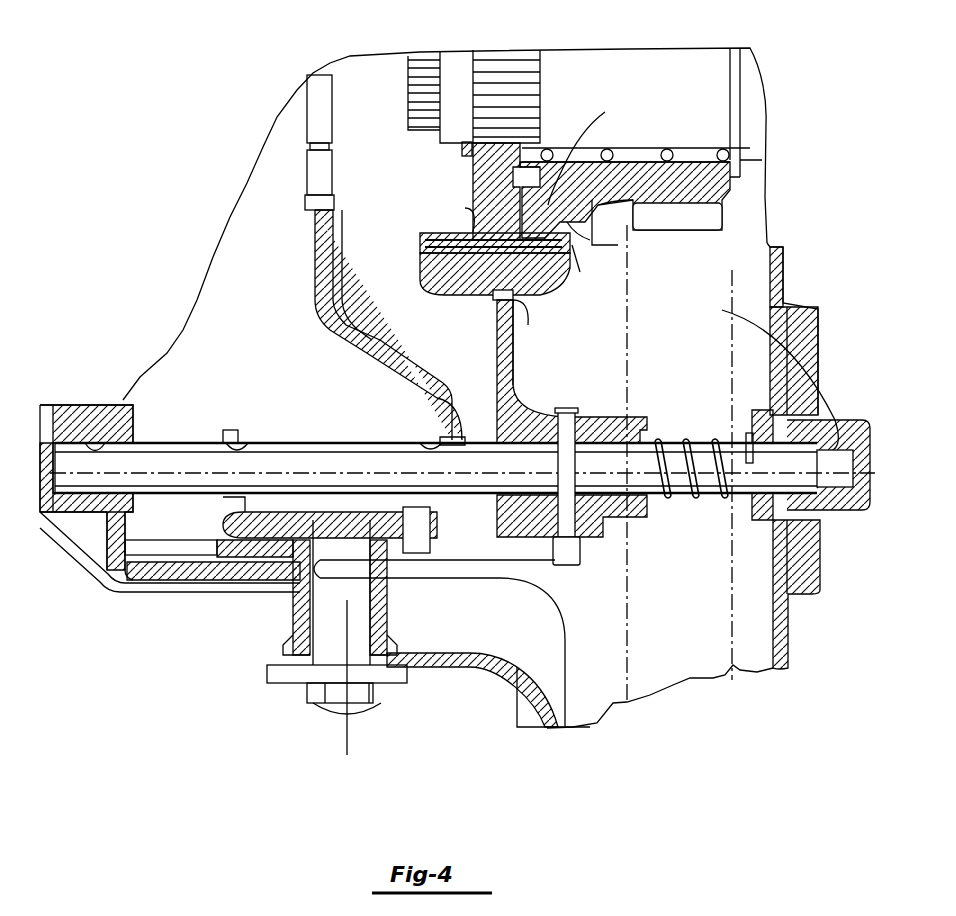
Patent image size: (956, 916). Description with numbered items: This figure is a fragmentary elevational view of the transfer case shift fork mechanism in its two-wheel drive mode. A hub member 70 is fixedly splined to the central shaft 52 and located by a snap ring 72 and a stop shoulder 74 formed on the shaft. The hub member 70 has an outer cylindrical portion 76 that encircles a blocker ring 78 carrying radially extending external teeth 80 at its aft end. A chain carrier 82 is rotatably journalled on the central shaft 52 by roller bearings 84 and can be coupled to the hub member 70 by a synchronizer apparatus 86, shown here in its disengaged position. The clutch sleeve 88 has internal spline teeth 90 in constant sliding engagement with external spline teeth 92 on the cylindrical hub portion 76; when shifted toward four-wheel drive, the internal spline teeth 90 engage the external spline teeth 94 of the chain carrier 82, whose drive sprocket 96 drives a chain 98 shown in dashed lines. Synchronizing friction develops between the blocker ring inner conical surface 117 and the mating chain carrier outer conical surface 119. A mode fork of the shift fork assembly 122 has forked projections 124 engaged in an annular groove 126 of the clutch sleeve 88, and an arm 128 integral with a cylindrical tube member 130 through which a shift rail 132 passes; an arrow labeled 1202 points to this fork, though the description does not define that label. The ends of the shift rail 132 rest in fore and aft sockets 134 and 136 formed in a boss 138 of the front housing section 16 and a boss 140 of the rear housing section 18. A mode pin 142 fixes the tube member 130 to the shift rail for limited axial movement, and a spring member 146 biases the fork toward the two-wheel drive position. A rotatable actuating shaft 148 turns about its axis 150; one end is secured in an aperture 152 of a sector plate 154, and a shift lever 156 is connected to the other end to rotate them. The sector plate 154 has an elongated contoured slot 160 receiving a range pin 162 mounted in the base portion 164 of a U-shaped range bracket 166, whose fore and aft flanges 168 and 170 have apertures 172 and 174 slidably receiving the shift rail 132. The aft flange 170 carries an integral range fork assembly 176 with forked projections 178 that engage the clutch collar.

The front housing section 16 is at (160, 585).
The rear housing section 18 is at (790, 318).
The central shaft 52 is at (456, 58).
The hub member 70 is at (475, 177).
The snap ring 72 is at (460, 150).
The stop shoulder 74 is at (530, 100).
The outer cylindrical portion 76 is at (441, 210).
The blocker ring 78 is at (552, 184).
The external teeth 80 is at (590, 255).
The chain carrier 82 is at (640, 162).
The roller bearings 84 is at (590, 150).
The synchronizer apparatus 86 is at (414, 238).
The clutch sleeve 88 is at (452, 287).
The internal spline teeth 90 is at (422, 252).
The external spline teeth 92 is at (565, 279).
The external spline teeth 94 is at (618, 248).
The drive sprocket 96 is at (693, 222).
The chain 98 is at (648, 343).
The blocker ring inner conical surface 117 is at (633, 190).
The chain carrier outer conical surface 119 is at (586, 148).
The shift fork assembly 122 is at (557, 395).
The forked projections 124 is at (494, 302).
The annular groove 126 is at (536, 312).
The arm 128 is at (514, 354).
The cylindrical tube member 130 is at (645, 432).
The shift rail 132 is at (684, 497).
The fore socket 134 is at (108, 437).
The aft socket 136 is at (833, 440).
The boss 138 is at (82, 407).
The boss 140 is at (766, 372).
The mode pin 142 is at (580, 420).
The spring member 146 is at (696, 433).
The actuating shaft 148 is at (350, 607).
The axis 150 is at (355, 747).
The aperture 152 is at (295, 597).
The sector plate 154 is at (222, 580).
The shift lever 156 is at (392, 687).
The elongated contoured slot 160 is at (575, 566).
The range pin 162 is at (448, 581).
The base portion 164 is at (268, 512).
The range bracket 166 is at (207, 529).
The fore flange 168 is at (230, 428).
The aft flange 170 is at (447, 432).
The aperture 172 is at (252, 443).
The aperture 174 is at (430, 443).
The range fork assembly 176 is at (360, 367).
The forked projections 178 is at (322, 122).
The arm end 1202 is at (490, 356).